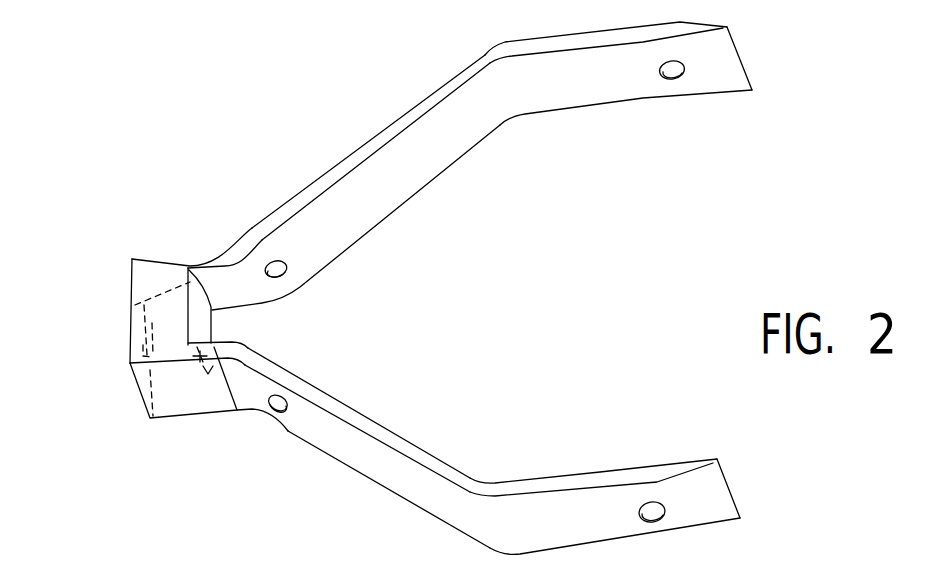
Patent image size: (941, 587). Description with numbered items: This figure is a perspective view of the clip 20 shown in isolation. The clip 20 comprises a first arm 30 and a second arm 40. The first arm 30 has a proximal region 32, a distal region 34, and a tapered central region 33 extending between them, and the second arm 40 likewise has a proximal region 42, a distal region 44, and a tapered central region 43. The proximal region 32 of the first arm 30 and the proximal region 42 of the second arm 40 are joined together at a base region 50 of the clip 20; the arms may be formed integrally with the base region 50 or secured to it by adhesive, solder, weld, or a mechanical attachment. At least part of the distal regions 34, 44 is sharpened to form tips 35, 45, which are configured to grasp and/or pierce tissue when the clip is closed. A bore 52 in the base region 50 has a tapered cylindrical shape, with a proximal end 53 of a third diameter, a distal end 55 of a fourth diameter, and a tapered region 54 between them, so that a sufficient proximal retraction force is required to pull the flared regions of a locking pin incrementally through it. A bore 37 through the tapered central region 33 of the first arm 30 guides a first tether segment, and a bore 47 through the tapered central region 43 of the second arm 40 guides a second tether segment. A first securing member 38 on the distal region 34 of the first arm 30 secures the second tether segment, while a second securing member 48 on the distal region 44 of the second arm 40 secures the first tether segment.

The clip 20 is at (220, 157).
The first arm 30 is at (378, 122).
The proximal region 32 is at (203, 253).
The tapered central region 33 is at (317, 185).
The distal region 34 is at (586, 92).
The tip 35 is at (743, 73).
The bore 37 is at (274, 261).
The first securing member 38 is at (672, 80).
The second arm 40 is at (380, 502).
The proximal region 42 is at (237, 411).
The tapered central region 43 is at (338, 454).
The distal region 44 is at (593, 503).
The tip 45 is at (725, 481).
The bore 47 is at (280, 412).
The second securing member 48 is at (648, 502).
The base region 50 is at (162, 270).
The bore 52 is at (200, 324).
The proximal end 53 is at (133, 349).
The tapered region 54 is at (166, 372).
The distal end 55 is at (200, 365).